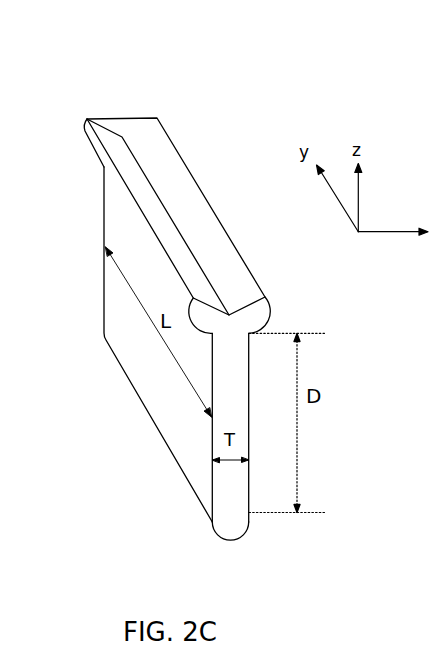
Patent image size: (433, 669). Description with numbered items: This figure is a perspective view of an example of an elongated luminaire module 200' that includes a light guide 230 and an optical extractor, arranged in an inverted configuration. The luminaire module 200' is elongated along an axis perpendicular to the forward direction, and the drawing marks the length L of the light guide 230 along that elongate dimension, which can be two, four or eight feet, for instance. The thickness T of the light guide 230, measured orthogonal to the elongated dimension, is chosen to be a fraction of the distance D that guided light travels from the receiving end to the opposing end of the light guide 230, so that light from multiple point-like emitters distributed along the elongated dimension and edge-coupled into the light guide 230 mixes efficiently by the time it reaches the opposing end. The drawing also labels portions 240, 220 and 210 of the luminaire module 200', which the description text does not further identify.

The luminaire module 200' is at (182, 298).
The ridge portion 240 is at (87, 119).
The light guide 230 is at (104, 282).
The stem portion 220 is at (214, 526).
The rounded end 210 is at (230, 540).